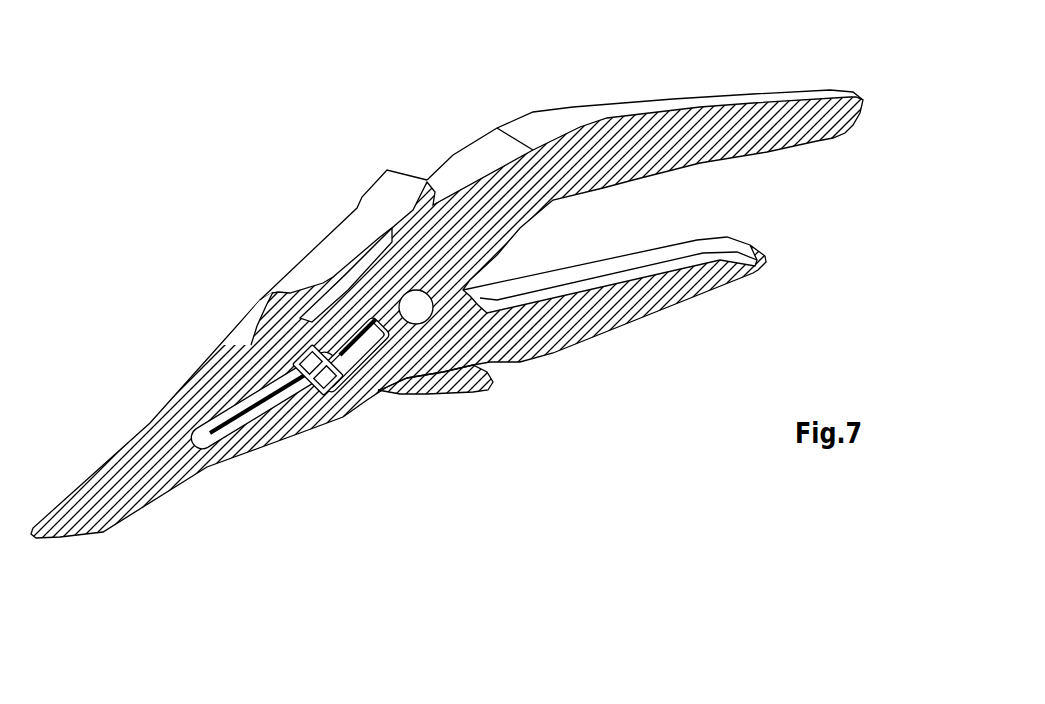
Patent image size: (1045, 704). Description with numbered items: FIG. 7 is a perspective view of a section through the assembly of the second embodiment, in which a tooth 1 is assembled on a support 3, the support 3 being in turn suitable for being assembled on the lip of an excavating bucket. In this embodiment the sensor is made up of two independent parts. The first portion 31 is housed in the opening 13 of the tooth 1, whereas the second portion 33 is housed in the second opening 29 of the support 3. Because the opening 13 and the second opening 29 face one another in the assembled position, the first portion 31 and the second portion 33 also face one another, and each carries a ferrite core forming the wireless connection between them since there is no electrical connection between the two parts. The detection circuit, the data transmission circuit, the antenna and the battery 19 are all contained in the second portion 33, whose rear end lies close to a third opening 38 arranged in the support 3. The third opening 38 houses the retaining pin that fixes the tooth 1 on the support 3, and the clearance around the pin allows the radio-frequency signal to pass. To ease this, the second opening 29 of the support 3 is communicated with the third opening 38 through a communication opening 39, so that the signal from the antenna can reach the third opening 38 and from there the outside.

The tooth 1 is at (167, 433).
The support 3 is at (725, 137).
The opening 13 is at (203, 447).
The battery 19 is at (372, 395).
The second opening 29 is at (320, 340).
The first portion 31 is at (222, 425).
The second portion 33 is at (352, 298).
The third opening 38 is at (412, 308).
The communication opening 39 is at (445, 385).